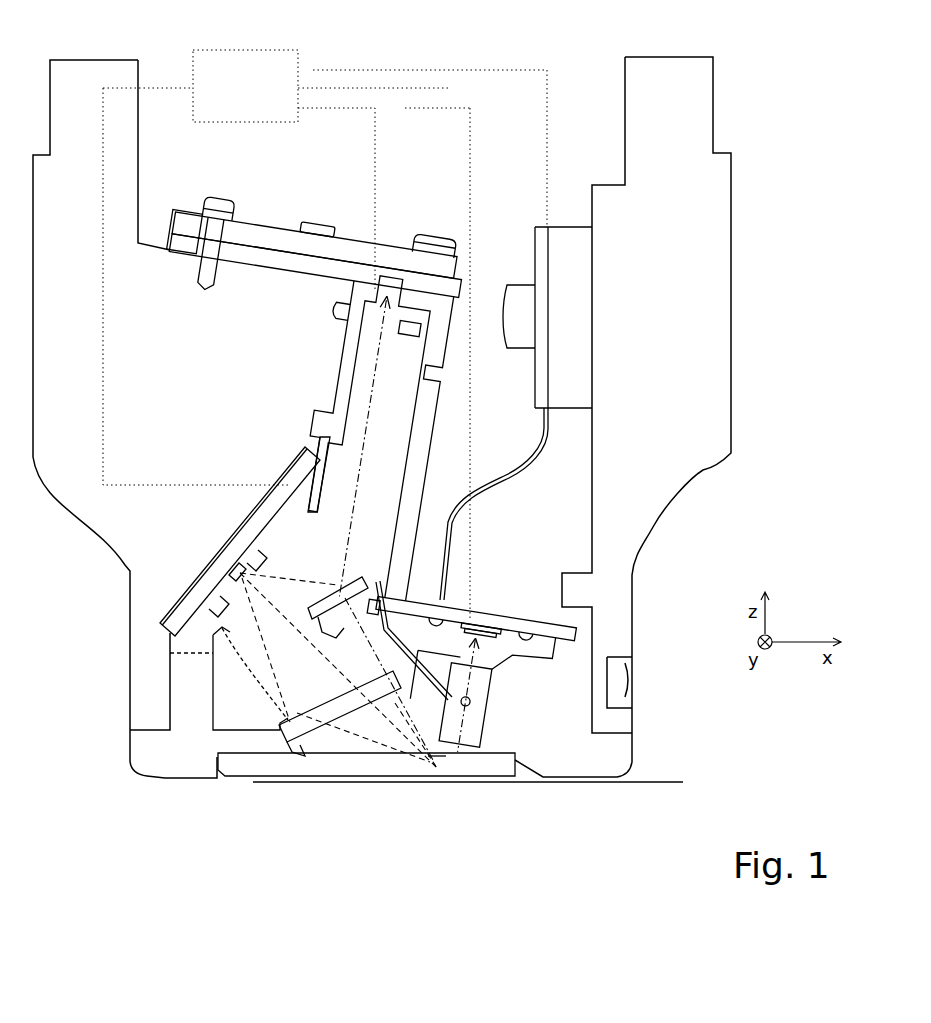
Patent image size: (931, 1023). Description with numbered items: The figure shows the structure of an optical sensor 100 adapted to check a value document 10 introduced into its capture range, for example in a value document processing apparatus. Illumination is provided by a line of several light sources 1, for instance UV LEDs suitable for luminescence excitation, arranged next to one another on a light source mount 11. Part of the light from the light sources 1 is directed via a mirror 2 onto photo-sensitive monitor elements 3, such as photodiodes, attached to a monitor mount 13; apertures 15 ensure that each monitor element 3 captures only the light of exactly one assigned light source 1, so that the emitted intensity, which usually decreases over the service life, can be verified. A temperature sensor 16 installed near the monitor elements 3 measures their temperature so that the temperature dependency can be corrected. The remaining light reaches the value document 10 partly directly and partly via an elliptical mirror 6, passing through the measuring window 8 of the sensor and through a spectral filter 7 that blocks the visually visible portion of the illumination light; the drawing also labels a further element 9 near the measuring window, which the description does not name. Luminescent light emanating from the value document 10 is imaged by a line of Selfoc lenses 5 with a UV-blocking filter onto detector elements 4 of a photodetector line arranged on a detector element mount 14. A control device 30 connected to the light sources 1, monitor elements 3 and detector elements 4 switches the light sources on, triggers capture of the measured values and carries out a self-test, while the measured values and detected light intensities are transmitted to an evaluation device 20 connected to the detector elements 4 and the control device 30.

The optical sensor 100 is at (426, 53).
The control device 30 is at (193, 50).
The evaluation device 20 is at (537, 227).
The monitor mount 13 is at (278, 228).
The temperature sensor 16 is at (447, 247).
The monitor element 3 is at (392, 280).
The aperture 15 is at (356, 318).
The light source mount 11 is at (288, 468).
The light source 1 is at (238, 572).
The mirror 2 is at (333, 605).
The detector element 4 is at (480, 620).
The detector element mount 14 is at (545, 628).
The Selfoc lens 5 is at (478, 722).
The elliptical mirror 6 is at (230, 690).
The spectral filter 7 is at (282, 732).
The measuring window 8 is at (492, 772).
The measuring window 9 is at (430, 770).
The value document 10 is at (645, 782).